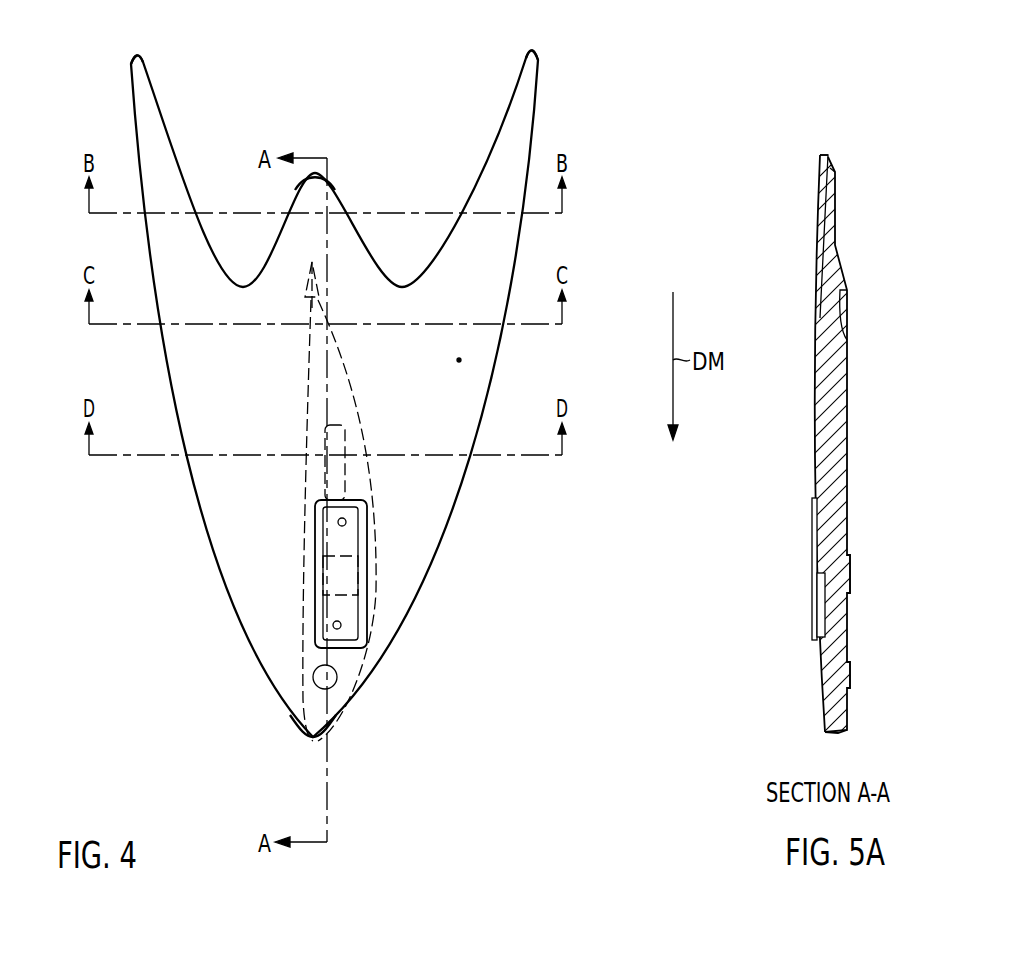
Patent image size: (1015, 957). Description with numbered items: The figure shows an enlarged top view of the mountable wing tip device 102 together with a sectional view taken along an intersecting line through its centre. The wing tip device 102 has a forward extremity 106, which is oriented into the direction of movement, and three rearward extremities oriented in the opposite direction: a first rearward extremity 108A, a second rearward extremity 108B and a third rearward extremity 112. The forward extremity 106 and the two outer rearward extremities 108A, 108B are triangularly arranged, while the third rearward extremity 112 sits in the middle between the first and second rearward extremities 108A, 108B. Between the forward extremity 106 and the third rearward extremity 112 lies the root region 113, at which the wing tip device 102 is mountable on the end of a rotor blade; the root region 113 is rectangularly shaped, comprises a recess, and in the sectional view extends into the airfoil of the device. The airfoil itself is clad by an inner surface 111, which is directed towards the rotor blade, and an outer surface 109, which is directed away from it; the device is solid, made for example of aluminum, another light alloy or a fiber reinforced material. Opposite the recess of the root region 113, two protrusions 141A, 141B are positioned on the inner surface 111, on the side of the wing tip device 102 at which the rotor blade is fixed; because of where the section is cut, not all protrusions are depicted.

In FIG. 4, the wing tip device 102 is at (482, 512).
In FIG. 5A, the wing tip device 102 is at (897, 511).
In FIG. 4, the forward extremity 106 is at (340, 713).
In FIG. 5A, the forward extremity 106 is at (817, 725).
In FIG. 4, the first rearward extremity 108A is at (131, 66).
In FIG. 5A, the first rearward extremity 108A is at (820, 165).
In FIG. 4, the second rearward extremity 108B is at (538, 70).
In FIG. 4, the outer surface 109 is at (459, 360).
In FIG. 5A, the outer surface 109 is at (812, 475).
In FIG. 5A, the inner surface 111 is at (847, 405).
In FIG. 4, the third rearward extremity 112 is at (310, 190).
In FIG. 5A, the root region 113 is at (790, 616).
In FIG. 5A, the protrusion 141A is at (866, 674).
In FIG. 5A, the protrusion 141B is at (866, 583).